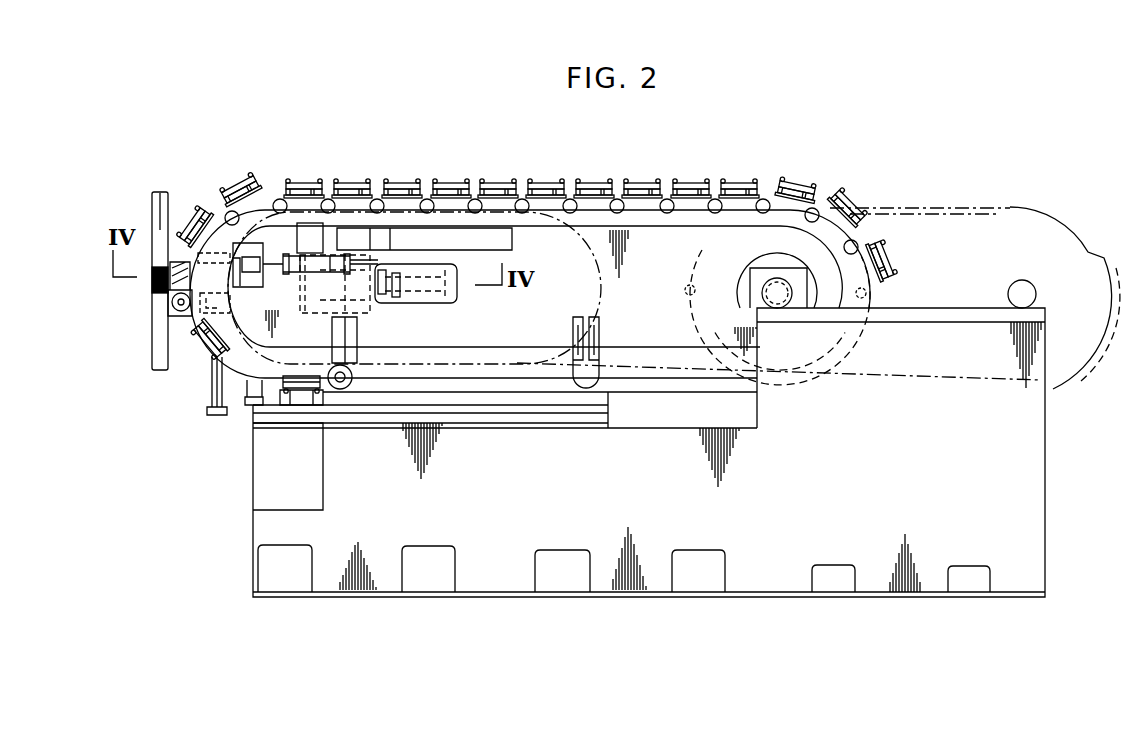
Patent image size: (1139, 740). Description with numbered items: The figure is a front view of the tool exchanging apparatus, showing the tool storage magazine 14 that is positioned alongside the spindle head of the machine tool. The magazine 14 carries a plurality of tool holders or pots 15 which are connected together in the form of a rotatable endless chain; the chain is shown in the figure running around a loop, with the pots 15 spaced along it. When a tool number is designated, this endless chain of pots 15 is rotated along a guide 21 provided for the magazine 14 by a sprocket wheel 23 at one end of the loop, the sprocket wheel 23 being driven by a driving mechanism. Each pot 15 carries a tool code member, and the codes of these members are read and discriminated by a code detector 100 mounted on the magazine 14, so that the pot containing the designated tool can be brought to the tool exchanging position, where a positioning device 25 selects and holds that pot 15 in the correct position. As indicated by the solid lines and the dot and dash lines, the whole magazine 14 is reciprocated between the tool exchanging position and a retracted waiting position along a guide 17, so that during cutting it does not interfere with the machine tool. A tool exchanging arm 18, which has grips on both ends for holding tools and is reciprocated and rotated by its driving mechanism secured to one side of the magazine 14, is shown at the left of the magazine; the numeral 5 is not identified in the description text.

The conveyor chain 5 is at (229, 211).
The tool storage magazine 14 is at (414, 198).
The tool holder or pot 15 is at (262, 192).
The guide 17 is at (1030, 457).
The tool exchanging arm 18 is at (168, 220).
The guide 21 is at (457, 368).
The sprocket wheel 23 is at (811, 208).
The positioning device 25 is at (206, 343).
The code detector 100 is at (160, 332).